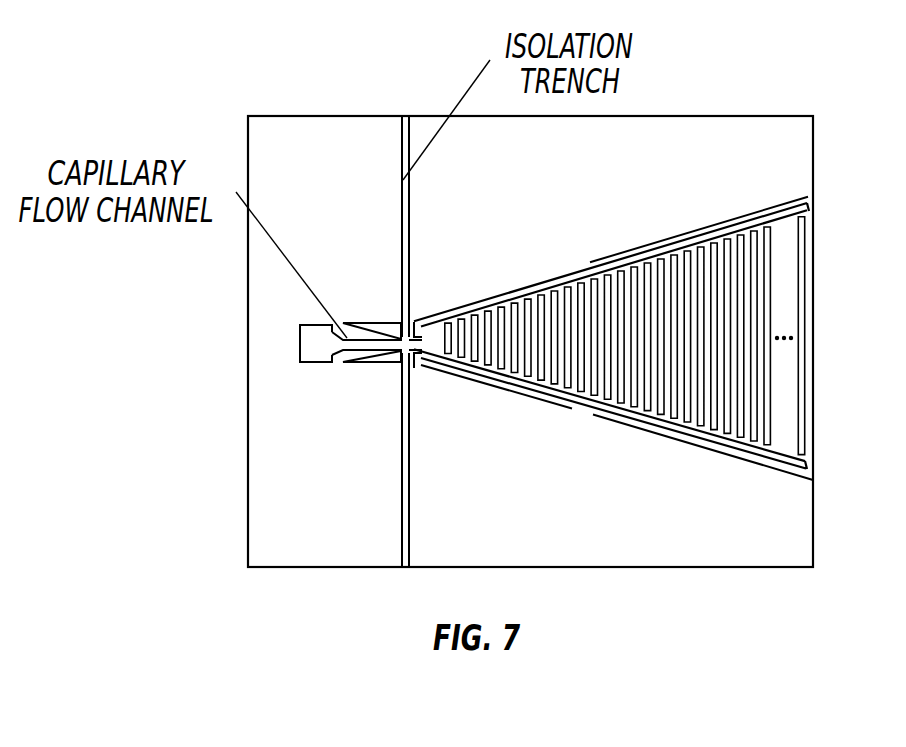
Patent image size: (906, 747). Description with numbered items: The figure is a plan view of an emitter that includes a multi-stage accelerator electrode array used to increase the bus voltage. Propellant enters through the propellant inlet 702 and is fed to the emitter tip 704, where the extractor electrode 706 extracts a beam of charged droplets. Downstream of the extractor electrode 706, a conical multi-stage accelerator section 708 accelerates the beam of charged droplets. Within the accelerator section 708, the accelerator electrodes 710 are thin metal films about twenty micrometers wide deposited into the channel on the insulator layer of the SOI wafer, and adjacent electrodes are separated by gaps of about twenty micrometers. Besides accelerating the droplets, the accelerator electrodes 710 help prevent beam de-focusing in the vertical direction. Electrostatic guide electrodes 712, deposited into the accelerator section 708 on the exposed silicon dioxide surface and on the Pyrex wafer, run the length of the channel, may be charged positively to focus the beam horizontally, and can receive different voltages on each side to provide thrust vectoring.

The propellant inlet 702 is at (301, 358).
The emitter tip 704 is at (402, 344).
The extractor electrode 706 is at (421, 353).
The conical multi-stage accelerator section 708 is at (548, 405).
The accelerator electrodes 710 is at (725, 425).
The electrostatic guide electrodes 712 is at (542, 288).